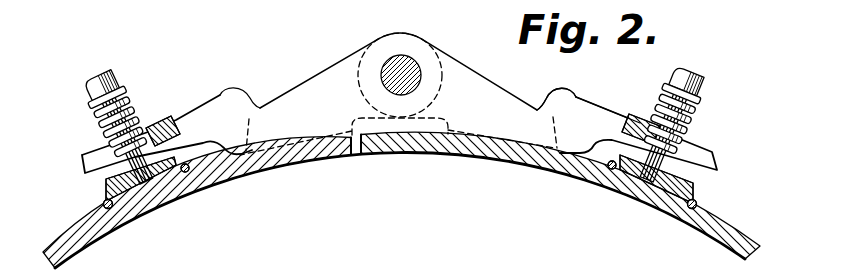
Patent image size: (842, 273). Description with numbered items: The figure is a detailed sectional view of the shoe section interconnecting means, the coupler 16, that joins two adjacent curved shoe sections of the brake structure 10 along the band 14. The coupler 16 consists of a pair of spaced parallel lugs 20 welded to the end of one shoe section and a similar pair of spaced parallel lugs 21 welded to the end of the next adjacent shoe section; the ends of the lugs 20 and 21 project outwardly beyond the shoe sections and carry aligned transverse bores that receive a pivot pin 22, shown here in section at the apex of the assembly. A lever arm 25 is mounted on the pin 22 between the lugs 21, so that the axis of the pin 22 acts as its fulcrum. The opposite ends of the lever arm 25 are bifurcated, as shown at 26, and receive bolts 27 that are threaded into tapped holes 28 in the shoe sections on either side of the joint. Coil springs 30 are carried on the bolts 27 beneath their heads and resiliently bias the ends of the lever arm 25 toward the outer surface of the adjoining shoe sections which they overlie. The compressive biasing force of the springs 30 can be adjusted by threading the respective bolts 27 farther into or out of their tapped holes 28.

The brake assembly 10 is at (380, 3).
The curved band 14 is at (513, 272).
The coupler 16 is at (398, 77).
The lugs 20 is at (497, 91).
The lugs 21 is at (322, 83).
The pivot pin 22 is at (391, 59).
The lever arm 25 is at (594, 107).
The bifurcated ends 26 is at (88, 158).
The bolts 27 is at (412, 119).
The tapped holes 28 is at (105, 194).
The coil springs 30 is at (128, 100).